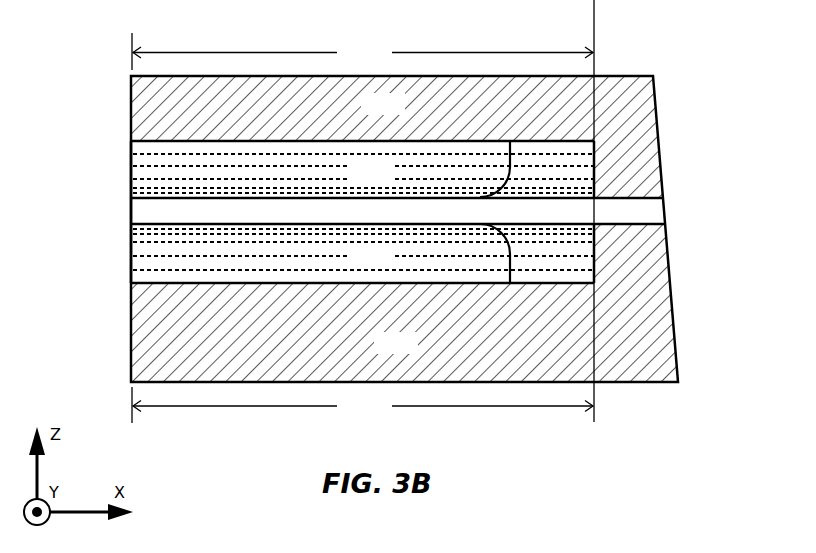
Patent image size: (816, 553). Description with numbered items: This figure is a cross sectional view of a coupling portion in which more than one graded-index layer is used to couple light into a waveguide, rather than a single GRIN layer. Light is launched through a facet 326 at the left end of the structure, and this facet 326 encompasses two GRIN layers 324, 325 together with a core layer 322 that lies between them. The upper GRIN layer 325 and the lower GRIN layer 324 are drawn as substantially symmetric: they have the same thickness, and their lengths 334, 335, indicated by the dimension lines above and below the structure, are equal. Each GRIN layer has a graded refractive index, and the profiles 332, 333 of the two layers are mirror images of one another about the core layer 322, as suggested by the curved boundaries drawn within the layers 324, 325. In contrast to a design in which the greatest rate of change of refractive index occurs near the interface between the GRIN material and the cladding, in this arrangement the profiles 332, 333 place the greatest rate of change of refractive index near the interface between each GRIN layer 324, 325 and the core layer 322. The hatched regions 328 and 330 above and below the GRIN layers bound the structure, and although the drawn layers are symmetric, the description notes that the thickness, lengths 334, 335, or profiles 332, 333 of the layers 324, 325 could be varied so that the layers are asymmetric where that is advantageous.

The core layer 322 is at (655, 214).
The GRIN layer 324 is at (388, 262).
The GRIN layer 325 is at (388, 176).
The facet 326 is at (127, 143).
The top cladding 328 is at (399, 112).
The bottom cladding 330 is at (412, 350).
The GRIN profile 332 is at (507, 252).
The GRIN profile 333 is at (487, 200).
The length 334 is at (362, 405).
The length 335 is at (363, 211).